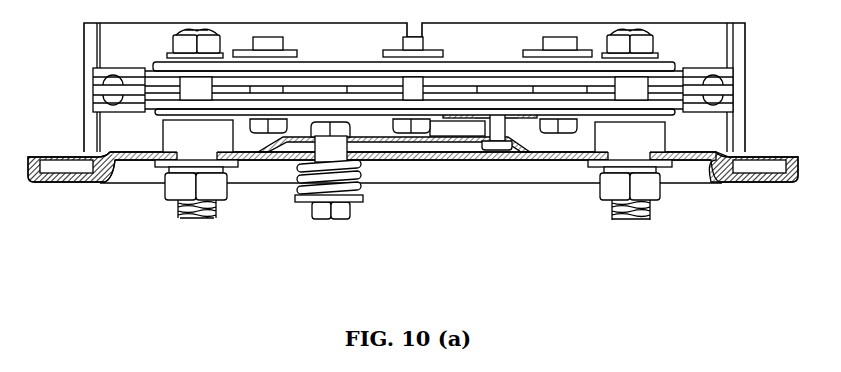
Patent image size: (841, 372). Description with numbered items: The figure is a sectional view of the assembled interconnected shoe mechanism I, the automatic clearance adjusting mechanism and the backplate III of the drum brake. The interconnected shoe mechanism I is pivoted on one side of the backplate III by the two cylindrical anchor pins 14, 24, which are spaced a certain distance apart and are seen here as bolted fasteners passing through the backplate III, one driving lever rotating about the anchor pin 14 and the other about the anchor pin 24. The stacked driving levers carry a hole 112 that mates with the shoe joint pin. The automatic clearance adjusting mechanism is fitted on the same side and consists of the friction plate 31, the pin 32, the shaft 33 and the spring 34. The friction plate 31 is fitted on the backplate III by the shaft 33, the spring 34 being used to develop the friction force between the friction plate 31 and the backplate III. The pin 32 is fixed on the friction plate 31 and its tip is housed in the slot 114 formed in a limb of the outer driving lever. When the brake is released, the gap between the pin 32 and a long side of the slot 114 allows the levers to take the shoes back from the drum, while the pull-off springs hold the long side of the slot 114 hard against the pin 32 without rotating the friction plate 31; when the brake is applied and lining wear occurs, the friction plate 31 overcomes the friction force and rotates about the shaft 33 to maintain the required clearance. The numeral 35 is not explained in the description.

The interconnected shoe mechanism I is at (742, 44).
The backplate III is at (765, 186).
The hole 112 is at (156, 117).
The anchor pin 14 is at (187, 218).
The anchor pin 24 is at (632, 220).
The friction plate 31 is at (458, 140).
The pin 32 is at (497, 146).
The shaft 33 is at (328, 222).
The spring 34 is at (346, 184).
The spring 35 is at (301, 197).
The slot 114 is at (509, 113).